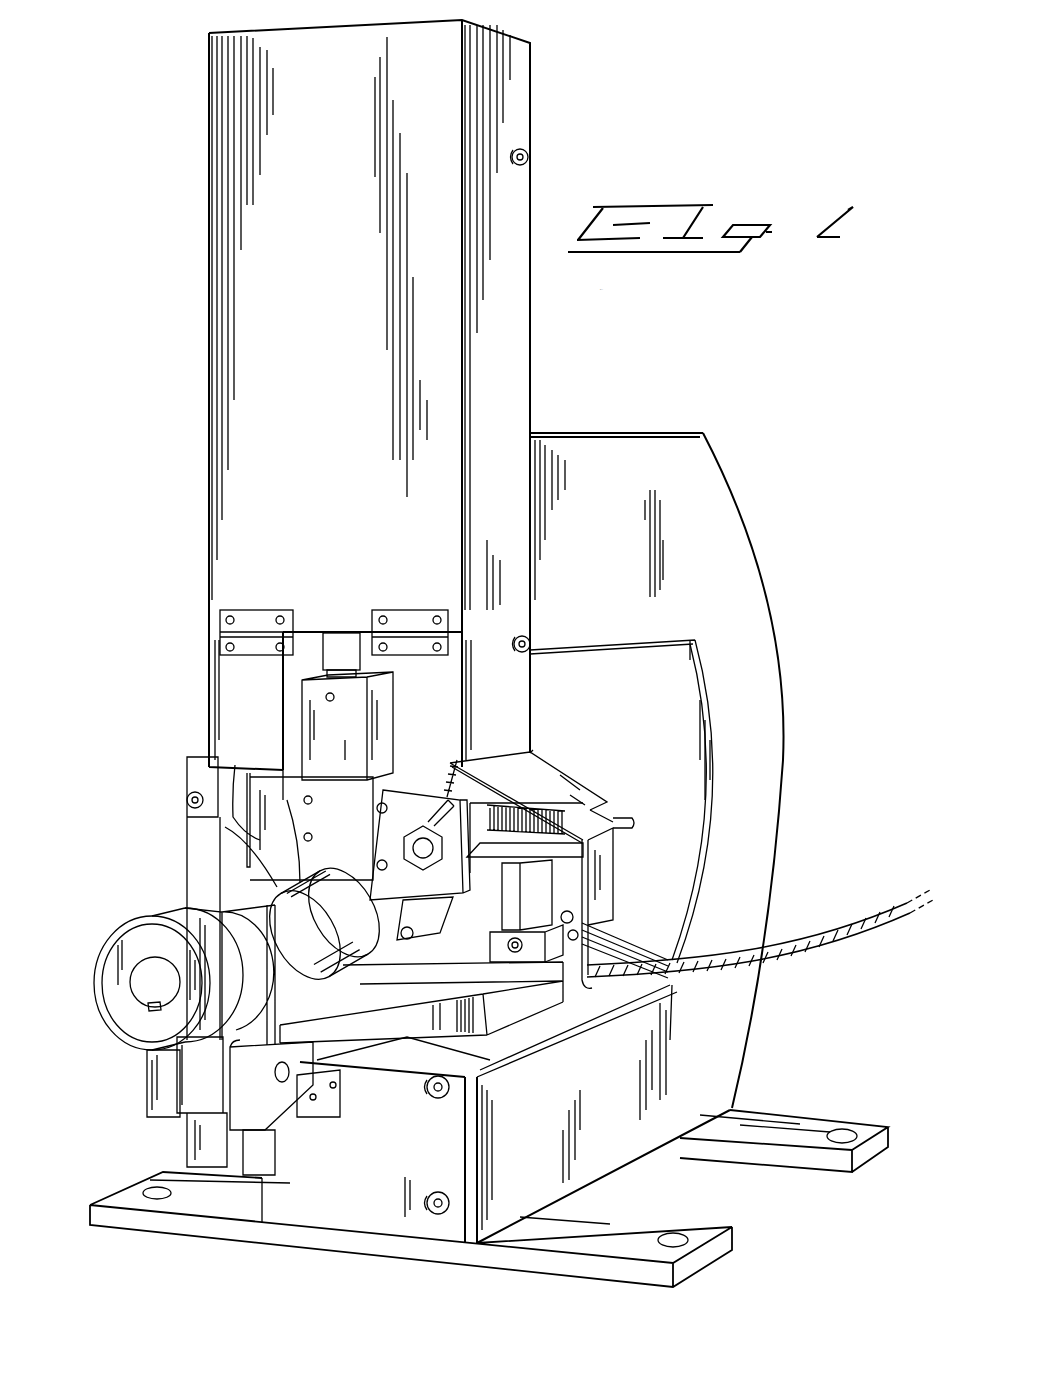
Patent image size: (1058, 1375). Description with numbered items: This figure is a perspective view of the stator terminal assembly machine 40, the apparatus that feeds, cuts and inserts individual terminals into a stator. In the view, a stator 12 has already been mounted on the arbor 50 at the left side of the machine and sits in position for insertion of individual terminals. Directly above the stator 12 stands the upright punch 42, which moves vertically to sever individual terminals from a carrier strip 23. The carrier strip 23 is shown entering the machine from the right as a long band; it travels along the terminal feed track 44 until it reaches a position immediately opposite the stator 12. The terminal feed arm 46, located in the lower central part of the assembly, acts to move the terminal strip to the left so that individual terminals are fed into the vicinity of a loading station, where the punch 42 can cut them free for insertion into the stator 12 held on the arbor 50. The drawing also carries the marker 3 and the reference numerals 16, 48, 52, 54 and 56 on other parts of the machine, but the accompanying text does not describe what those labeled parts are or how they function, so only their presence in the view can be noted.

The section line 3- 3 is at (150, 983).
The stator 12 is at (303, 877).
The guide bracket 16 is at (280, 888).
The carrier strip 23 is at (795, 963).
The stator terminal assembly machine 40 is at (119, 428).
The upright punch 42 is at (315, 735).
The terminal feed track 44 is at (550, 975).
The terminal feed arm 46 is at (407, 940).
The base 48 is at (590, 1167).
The arbor 50 is at (220, 913).
The support bracket 52 is at (147, 1117).
The wheel 54 is at (107, 957).
The guide bracket 56 is at (535, 800).